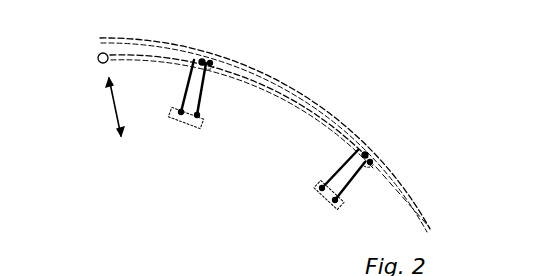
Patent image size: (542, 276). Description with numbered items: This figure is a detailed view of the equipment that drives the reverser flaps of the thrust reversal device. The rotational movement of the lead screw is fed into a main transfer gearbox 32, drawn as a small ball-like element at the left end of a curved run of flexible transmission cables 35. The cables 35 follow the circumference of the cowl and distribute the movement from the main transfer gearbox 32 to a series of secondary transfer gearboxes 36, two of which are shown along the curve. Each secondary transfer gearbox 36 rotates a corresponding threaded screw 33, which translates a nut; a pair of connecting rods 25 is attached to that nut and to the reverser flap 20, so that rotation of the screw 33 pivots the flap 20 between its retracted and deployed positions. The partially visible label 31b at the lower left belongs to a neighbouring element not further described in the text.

The reverser flap 20 is at (183, 128).
The connecting rods 25 is at (184, 88).
The rail segment 31b is at (62, 275).
The transfer gearbox 32 is at (97, 60).
The threaded screw 33 is at (203, 58).
The flexible transmission cables 35 is at (142, 55).
The secondary transfer gearboxes 36 is at (213, 62).